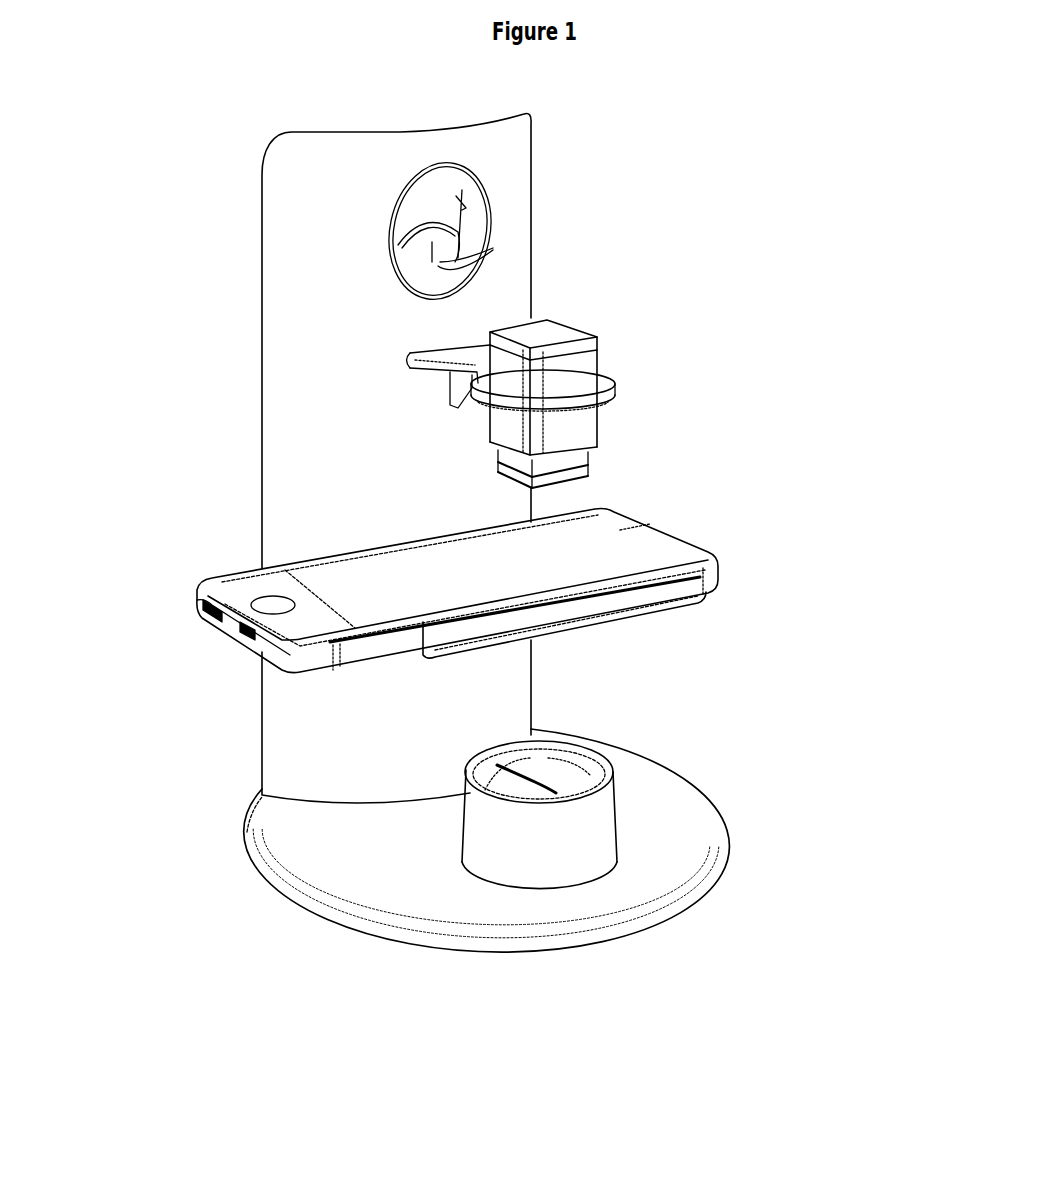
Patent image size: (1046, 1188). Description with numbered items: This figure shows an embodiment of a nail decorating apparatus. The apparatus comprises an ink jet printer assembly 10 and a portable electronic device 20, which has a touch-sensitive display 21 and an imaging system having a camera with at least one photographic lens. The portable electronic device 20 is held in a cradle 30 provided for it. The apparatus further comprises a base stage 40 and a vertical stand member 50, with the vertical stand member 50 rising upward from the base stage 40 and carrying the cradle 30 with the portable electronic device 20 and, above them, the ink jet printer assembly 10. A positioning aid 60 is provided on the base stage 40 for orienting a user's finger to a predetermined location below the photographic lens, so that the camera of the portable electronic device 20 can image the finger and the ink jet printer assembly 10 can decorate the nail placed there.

The ink jet printer assembly 10 is at (580, 371).
The portable electronic device 20 is at (675, 553).
The touch-sensitive display 21 is at (345, 608).
The cradle 30 is at (605, 607).
The base stage 40 is at (667, 832).
The vertical stand member 50 is at (307, 400).
The positioning aid 60 is at (518, 842).